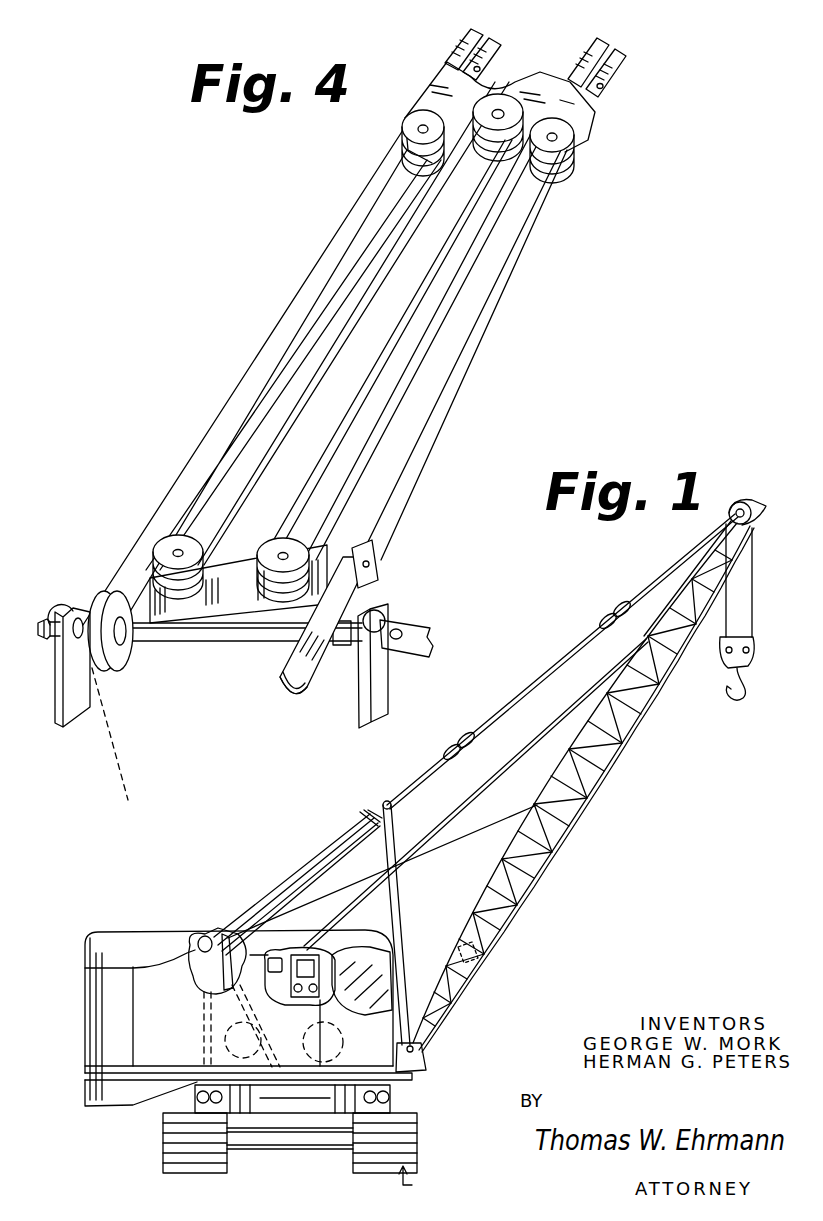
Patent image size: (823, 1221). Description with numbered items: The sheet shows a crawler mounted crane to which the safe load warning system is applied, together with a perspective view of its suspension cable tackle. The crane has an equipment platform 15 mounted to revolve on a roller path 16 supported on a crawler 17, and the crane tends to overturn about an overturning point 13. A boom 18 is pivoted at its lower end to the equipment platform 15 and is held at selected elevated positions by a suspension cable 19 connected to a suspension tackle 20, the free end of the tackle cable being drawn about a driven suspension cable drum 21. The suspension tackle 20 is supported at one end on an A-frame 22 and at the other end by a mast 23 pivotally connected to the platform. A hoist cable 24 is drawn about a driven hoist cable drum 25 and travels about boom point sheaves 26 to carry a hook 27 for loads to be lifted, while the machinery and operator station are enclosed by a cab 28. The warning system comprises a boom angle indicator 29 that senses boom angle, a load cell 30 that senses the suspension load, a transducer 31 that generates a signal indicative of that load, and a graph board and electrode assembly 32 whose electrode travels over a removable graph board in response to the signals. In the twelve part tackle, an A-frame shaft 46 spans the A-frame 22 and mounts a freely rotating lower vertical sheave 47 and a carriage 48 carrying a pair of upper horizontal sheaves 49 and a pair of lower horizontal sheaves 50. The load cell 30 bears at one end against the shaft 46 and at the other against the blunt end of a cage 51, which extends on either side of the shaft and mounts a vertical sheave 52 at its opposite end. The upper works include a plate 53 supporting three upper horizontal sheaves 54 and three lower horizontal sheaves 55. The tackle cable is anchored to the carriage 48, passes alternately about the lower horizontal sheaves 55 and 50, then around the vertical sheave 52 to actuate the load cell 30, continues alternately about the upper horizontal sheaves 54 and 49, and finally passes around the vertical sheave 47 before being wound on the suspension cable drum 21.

In FIG. 1, the overturning point 13 is at (412, 1185).
In FIG. 1, the equipment platform 15 is at (398, 1080).
In FIG. 1, the roller path 16 is at (312, 1115).
In FIG. 1, the crawler 17 is at (165, 1140).
In FIG. 1, the boom 18 is at (572, 842).
In FIG. 1, the suspension cable 19 is at (575, 650).
In FIG. 4, the suspension tackle 20 is at (283, 290).
In FIG. 1, the suspension tackle 20 is at (280, 870).
In FIG. 1, the suspension cable drum 21 is at (225, 1042).
In FIG. 4, the A-frame 22 is at (56, 688).
In FIG. 1, the A-frame 22 is at (200, 976).
In FIG. 1, the mast 23 is at (396, 836).
In FIG. 1, the hoist cable 24 is at (522, 762).
In FIG. 1, the hoist cable drum 25 is at (345, 1042).
In FIG. 1, the boom point sheaves 26 is at (752, 508).
In FIG. 1, the hook 27 is at (724, 692).
In FIG. 1, the cab 28 is at (368, 945).
In FIG. 1, the boom angle indicator 29 is at (460, 944).
In FIG. 4, the load cell 30 is at (320, 694).
In FIG. 1, the transducer 31 is at (280, 955).
In FIG. 1, the graph board and electrode assembly 32 is at (310, 952).
In FIG. 4, the A-frame shaft 46 is at (212, 642).
In FIG. 4, the lower vertical sheave 47 is at (116, 662).
In FIG. 4, the carriage 48 is at (230, 568).
In FIG. 4, the upper horizontal sheaves 49 is at (195, 545).
In FIG. 4, the lower horizontal sheaves 50 is at (176, 590).
In FIG. 4, the cage 51 is at (352, 605).
In FIG. 1, the cage 51 is at (224, 932).
In FIG. 4, the vertical sheave 52 is at (380, 556).
In FIG. 4, the plate 53 is at (492, 88).
In FIG. 4, the upper horizontal sheaves 54 is at (410, 125).
In FIG. 4, the lower horizontal sheaves 55 is at (404, 162).